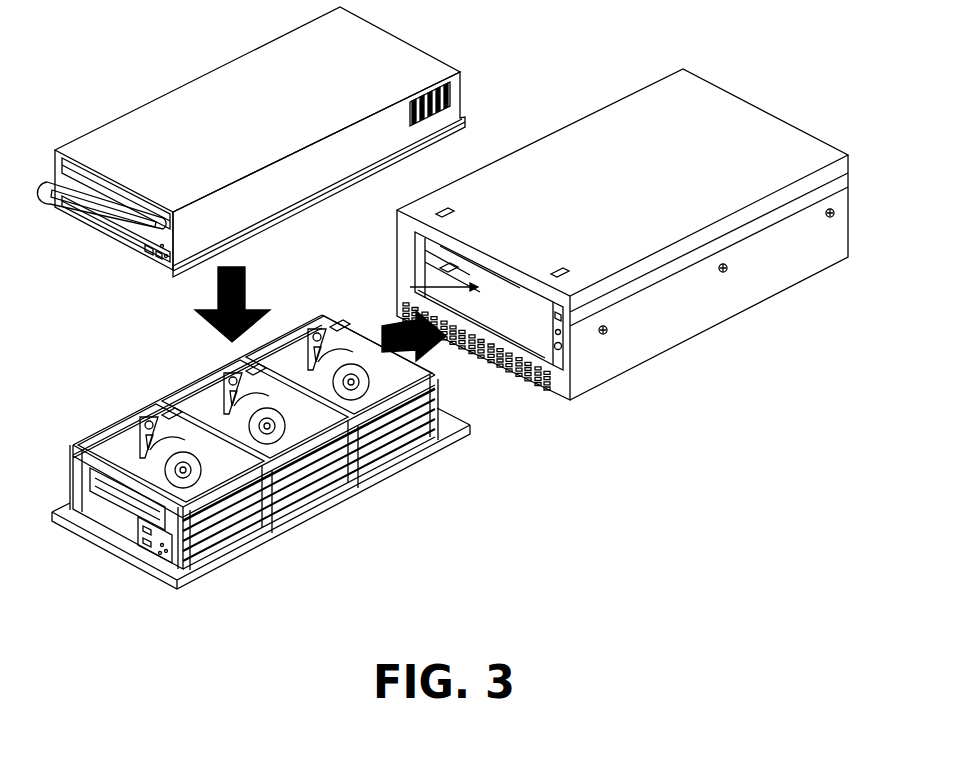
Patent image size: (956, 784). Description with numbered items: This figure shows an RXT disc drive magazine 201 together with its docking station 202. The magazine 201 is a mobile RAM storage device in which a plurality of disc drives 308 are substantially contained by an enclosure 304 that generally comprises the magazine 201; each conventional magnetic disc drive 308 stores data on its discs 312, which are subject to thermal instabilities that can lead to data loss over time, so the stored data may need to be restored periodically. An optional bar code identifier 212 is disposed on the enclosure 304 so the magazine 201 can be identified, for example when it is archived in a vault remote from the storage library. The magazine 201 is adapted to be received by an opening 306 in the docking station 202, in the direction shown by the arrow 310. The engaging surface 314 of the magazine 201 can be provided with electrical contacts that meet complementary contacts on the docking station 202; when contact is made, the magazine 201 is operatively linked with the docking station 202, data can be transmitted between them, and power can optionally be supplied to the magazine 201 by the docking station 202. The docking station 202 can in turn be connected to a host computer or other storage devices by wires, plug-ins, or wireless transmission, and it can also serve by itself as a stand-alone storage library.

The disc drive magazine 201 is at (143, 407).
The docking station 202 is at (583, 120).
The bar code identifier 212 is at (452, 100).
The enclosure 304 is at (208, 72).
The opening 306 is at (410, 287).
The disc drive 308 is at (124, 422).
The arrow 310 is at (386, 328).
The disc 312 is at (337, 322).
The engaging surface 314 is at (438, 408).